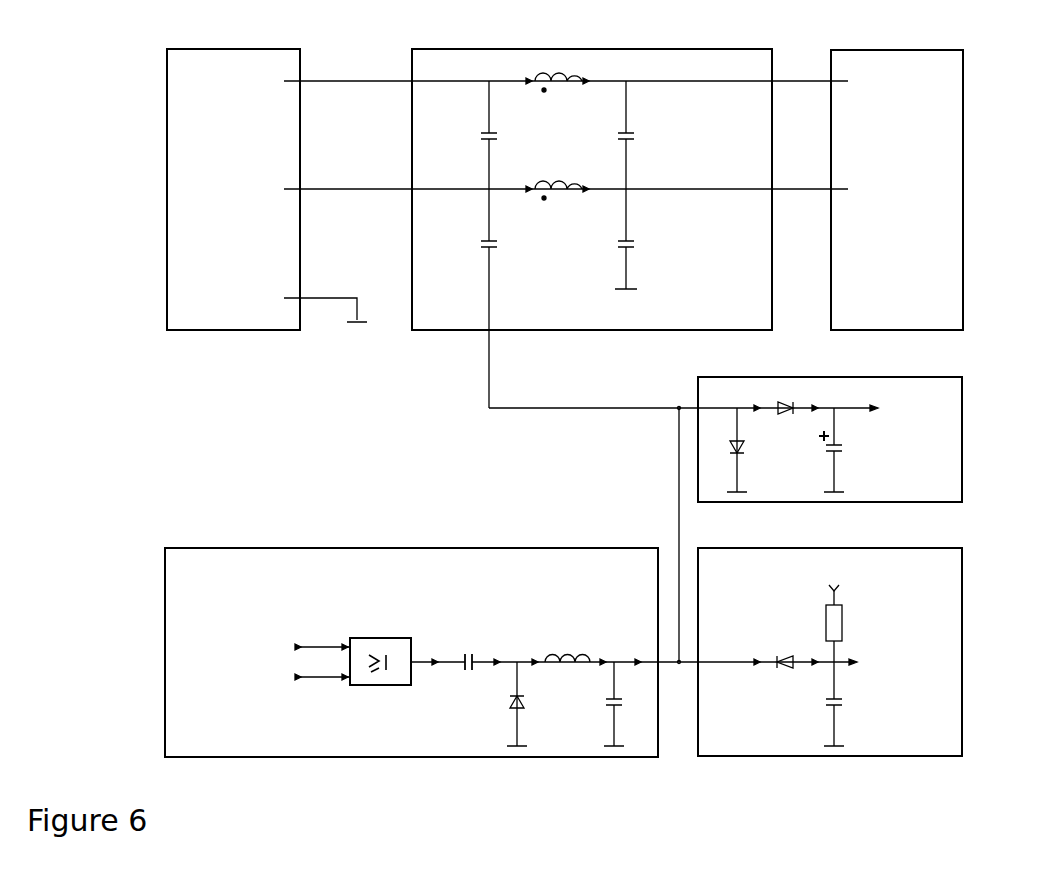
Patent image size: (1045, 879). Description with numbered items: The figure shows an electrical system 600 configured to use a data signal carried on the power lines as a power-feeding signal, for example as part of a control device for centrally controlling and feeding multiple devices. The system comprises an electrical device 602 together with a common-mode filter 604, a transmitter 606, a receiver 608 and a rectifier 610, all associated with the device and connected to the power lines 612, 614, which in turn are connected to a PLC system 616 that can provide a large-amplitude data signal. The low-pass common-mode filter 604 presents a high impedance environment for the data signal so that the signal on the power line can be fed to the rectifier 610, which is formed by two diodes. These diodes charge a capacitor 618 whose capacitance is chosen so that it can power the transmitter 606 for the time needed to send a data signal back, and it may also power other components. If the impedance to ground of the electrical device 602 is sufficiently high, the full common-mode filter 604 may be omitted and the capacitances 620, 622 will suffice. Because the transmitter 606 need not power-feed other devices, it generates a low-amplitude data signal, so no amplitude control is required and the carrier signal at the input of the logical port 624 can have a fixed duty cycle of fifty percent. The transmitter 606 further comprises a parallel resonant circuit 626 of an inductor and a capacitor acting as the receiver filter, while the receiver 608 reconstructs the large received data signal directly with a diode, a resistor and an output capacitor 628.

The electrical system 600 is at (619, 805).
The electrical device 602 is at (963, 274).
The common-mode filter 604 is at (592, 221).
The transmitter 606 is at (379, 644).
The receiver 608 is at (843, 644).
The rectifier 610 is at (858, 432).
The power line 612 is at (374, 85).
The power line 614 is at (374, 193).
The PLC system 616 is at (167, 251).
The capacitor 618 is at (876, 446).
The capacitance 620 is at (471, 128).
The capacitance 622 is at (475, 239).
The logical port 624 is at (357, 640).
The parallel resonant circuit 626 is at (588, 630).
The output capacitor 628 is at (812, 693).